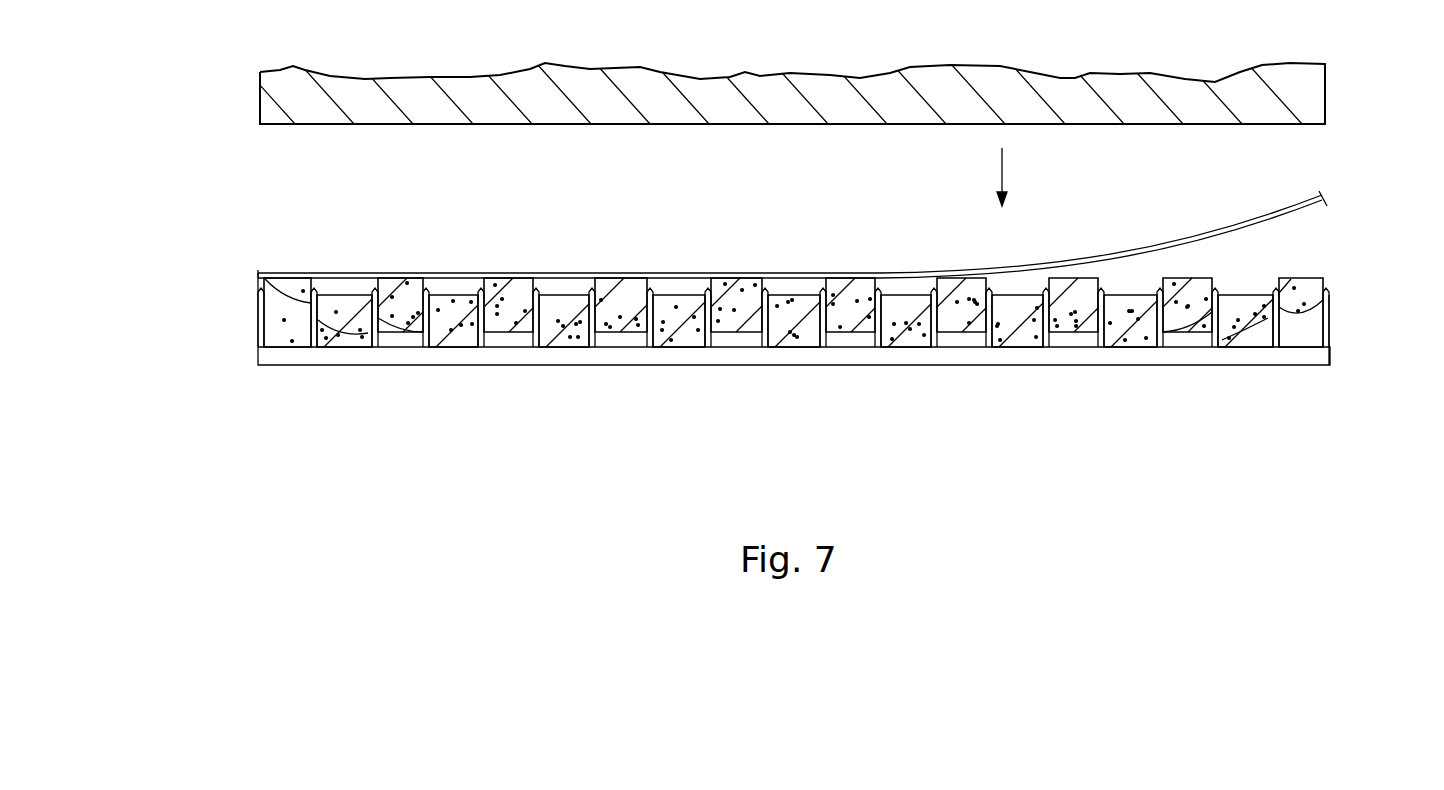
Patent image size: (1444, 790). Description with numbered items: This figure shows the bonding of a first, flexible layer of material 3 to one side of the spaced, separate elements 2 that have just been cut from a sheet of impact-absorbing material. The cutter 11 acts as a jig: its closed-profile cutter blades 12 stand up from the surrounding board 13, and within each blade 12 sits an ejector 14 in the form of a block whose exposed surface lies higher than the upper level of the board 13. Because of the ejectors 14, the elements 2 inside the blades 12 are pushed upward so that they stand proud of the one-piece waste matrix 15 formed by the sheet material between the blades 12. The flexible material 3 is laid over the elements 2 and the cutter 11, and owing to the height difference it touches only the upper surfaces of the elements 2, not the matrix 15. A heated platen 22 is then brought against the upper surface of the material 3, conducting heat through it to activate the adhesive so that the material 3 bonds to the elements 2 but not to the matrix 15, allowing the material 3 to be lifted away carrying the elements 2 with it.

The heated platen 22 is at (663, 107).
The first flexible layer of material 3 is at (1176, 242).
The cutter 11 is at (233, 300).
The board 13 is at (1173, 355).
The ejector 14 is at (1393, 447).
The matrix 15 is at (668, 328).
The separate elements 2 is at (953, 322).
The cutter blade 12 is at (568, 344).